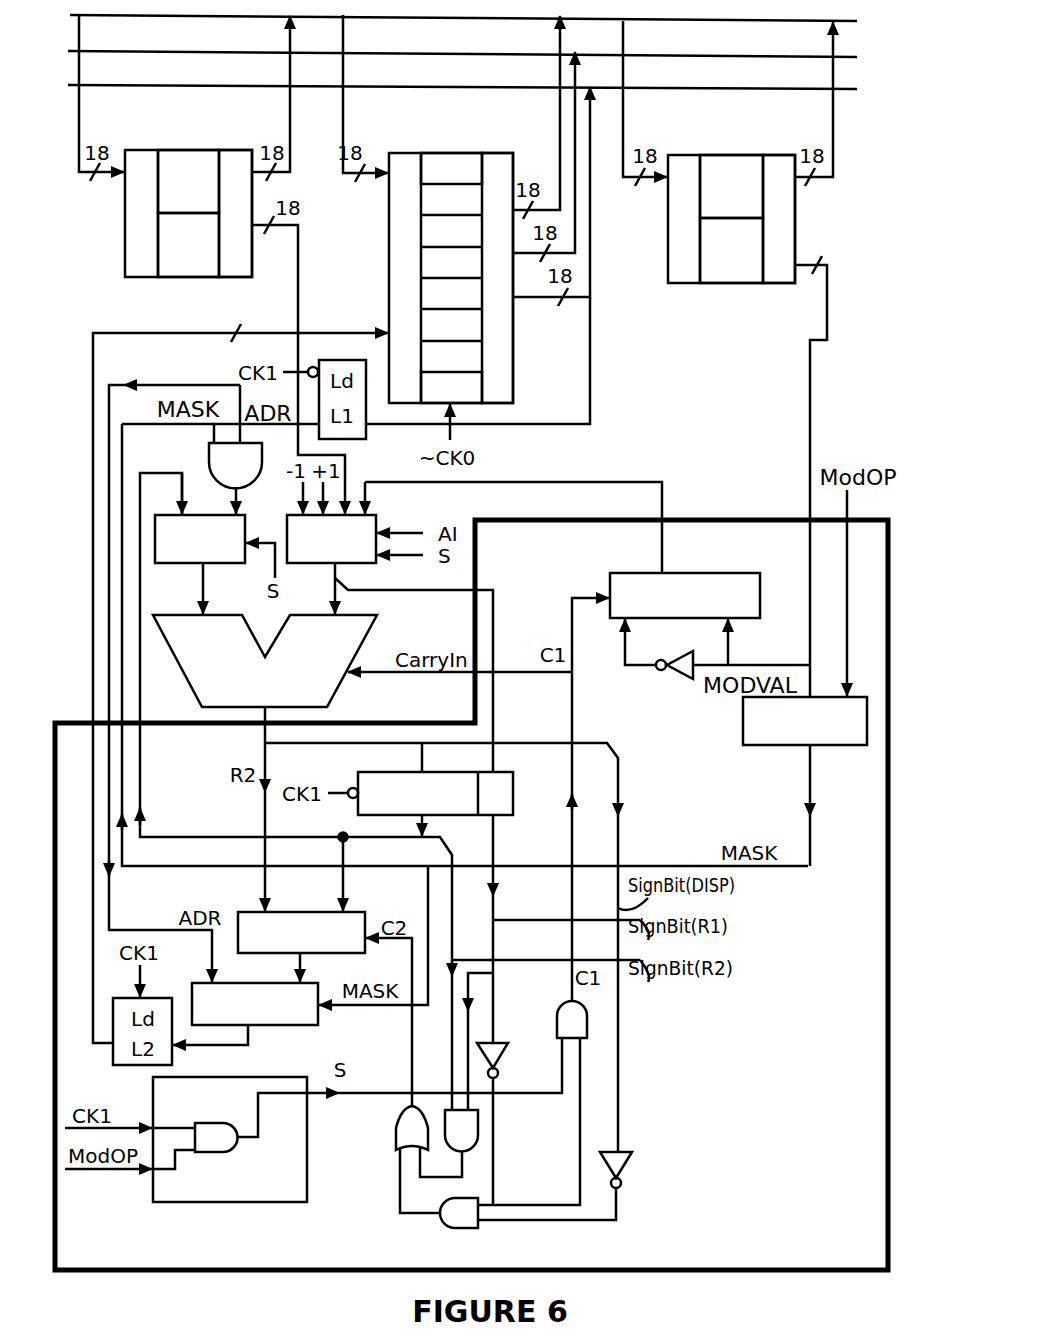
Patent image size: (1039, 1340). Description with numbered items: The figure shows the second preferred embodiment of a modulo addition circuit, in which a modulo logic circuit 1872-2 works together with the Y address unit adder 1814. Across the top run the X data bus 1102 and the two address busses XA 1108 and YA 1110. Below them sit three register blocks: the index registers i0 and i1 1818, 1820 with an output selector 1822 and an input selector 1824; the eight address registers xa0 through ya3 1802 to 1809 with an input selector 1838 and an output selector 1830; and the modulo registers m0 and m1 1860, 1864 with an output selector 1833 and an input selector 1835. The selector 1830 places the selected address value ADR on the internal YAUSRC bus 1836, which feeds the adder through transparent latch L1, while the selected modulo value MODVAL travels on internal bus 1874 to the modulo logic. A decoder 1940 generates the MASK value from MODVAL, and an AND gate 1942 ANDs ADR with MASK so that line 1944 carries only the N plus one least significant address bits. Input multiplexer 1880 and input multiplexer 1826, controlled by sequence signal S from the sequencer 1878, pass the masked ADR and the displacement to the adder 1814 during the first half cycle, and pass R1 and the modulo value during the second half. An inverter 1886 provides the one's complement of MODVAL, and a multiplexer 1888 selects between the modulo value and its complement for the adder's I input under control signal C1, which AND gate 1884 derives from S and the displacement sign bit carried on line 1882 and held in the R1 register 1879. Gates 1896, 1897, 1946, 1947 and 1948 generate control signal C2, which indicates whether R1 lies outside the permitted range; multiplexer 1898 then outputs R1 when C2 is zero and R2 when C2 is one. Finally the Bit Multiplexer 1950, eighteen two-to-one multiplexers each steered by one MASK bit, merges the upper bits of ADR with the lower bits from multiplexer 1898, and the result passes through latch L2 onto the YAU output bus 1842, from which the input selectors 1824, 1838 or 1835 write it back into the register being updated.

The X data bus 1102 is at (432, 20).
The X address bus XA 1108 is at (432, 54).
The Y address bus YA 1110 is at (432, 88).
The index register i0 1818 is at (186, 150).
The index register i1 1820 is at (167, 200).
The selector 1822 is at (230, 150).
The selector 1824 is at (162, 199).
The address register xa0 1802 is at (452, 150).
The address register ya3 1809 is at (430, 263).
The selector 1838 is at (445, 251).
The selector 1830 is at (513, 321).
The YAUSRC bus 1836 is at (592, 402).
The modulo register m0 1860 is at (728, 155).
The modulo register m1 1864 is at (714, 204).
The selector 1833 is at (780, 155).
The selector 1835 is at (714, 201).
The internal bus 1874 is at (810, 463).
The YAU output data bus 1842 is at (215, 333).
The AND gate 1942 is at (235, 465).
The line 1944 is at (232, 493).
The input multiplexer 1880 is at (157, 540).
The input multiplexer 1826 is at (378, 520).
The Y address unit adder 1814 is at (323, 688).
The multiplexer 1888 is at (705, 573).
The inverter 1886 is at (680, 677).
The decoder 1940 is at (780, 745).
The R1 register 1879 is at (395, 772).
The line 1882 is at (495, 852).
The multiplexer 1898 is at (283, 912).
The Bit Multiplexer 1950 is at (318, 1013).
The sequencer 1878 is at (265, 1202).
The gate 1897 is at (392, 1122).
The gate 1946 is at (468, 1115).
The gate 1896 is at (470, 1228).
The gate 1948 is at (505, 1047).
The gate 1947 is at (628, 1162).
The AND gate 1884 is at (560, 1018).
The modulo logic circuit 1872-2 is at (773, 1252).